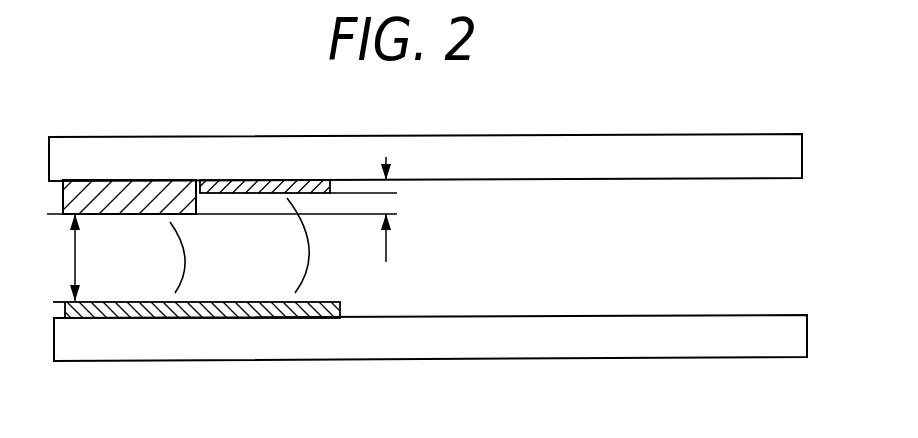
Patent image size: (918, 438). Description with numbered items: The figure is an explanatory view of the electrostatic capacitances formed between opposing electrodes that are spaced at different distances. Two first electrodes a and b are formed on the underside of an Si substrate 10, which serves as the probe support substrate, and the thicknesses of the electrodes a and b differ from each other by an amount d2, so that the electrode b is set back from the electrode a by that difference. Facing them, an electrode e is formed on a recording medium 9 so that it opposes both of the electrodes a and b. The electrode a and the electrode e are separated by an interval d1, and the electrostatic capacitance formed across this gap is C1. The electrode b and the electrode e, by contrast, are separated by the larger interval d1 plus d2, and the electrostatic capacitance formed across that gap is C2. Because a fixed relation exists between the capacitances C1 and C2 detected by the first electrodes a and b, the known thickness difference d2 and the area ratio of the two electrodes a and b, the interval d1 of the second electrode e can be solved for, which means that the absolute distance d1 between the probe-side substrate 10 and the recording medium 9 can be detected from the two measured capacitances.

The Si substrate 10 is at (520, 143).
The recording medium 9 is at (540, 346).
The electrode a is at (129, 197).
The electrode b is at (256, 191).
The electrode e is at (137, 310).
The interval d1 is at (90, 257).
The difference in thickness d2 is at (400, 217).
The electrostatic capacitance C1 is at (197, 257).
The electrostatic capacitance C2 is at (317, 245).